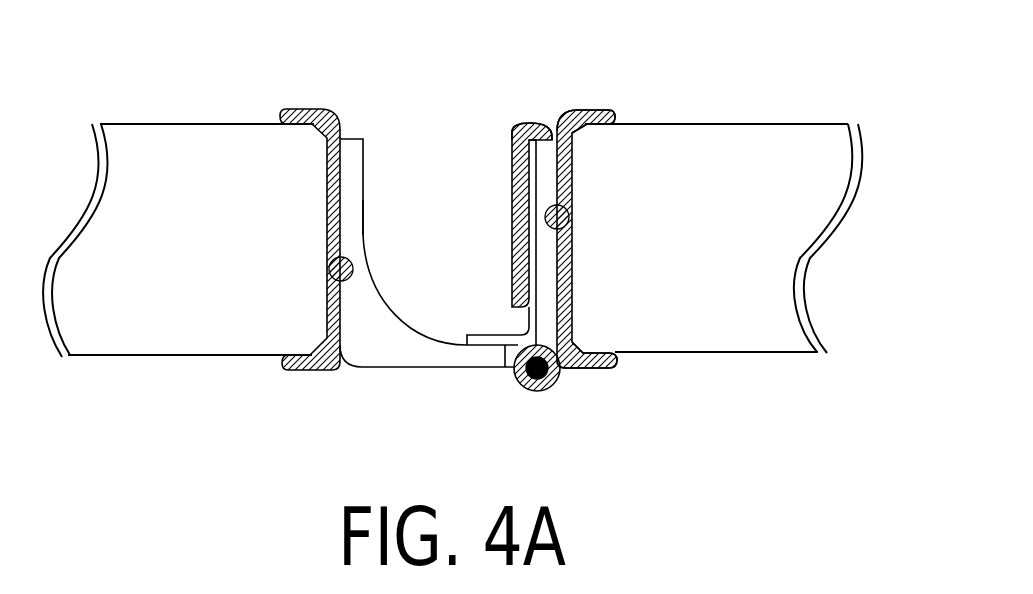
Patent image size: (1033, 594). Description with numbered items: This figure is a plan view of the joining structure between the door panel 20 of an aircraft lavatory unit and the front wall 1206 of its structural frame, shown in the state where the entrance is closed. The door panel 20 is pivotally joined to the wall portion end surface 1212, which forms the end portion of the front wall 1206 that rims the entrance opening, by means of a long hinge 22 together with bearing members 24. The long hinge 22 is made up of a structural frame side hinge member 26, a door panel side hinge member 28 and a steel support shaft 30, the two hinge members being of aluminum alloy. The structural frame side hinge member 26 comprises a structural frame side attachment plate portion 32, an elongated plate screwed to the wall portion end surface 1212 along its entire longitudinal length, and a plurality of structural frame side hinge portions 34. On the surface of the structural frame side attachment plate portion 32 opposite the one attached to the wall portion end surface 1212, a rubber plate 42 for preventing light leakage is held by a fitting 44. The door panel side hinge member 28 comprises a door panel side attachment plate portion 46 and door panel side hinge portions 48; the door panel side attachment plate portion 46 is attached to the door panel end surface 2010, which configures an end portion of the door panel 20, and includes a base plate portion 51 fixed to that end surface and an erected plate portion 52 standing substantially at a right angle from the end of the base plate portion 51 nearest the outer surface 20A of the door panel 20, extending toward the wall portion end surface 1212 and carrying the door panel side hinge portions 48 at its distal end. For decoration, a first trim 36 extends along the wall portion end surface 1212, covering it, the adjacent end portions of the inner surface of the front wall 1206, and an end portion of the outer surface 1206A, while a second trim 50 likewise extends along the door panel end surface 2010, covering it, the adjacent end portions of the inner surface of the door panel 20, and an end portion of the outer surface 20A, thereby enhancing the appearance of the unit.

The door panel 20 is at (178, 278).
The outer surface of the door panel 20A is at (97, 357).
The door panel end surface 2010 is at (330, 265).
The door panel side hinge member 28 is at (270, 217).
The second trim 50 is at (411, 238).
The base plate portion 51 is at (362, 176).
The erected plate portion 52 is at (385, 370).
The door panel side attachment plate portion 46 is at (363, 215).
The long hinge 22 is at (507, 407).
The door panel side hinge portions 48 is at (512, 375).
The bearing member 24 is at (558, 384).
The support shaft 30 is at (530, 389).
The structural frame side attachment plate portion 32 is at (497, 182).
The fitting 44 is at (512, 140).
The rubber plate 42 is at (518, 334).
The structural frame side hinge member 26 is at (625, 209).
The first trim 36 is at (594, 109).
The structural frame side hinge portions 34 is at (573, 368).
The wall portion end surface 1212 is at (569, 203).
The front wall 1206 is at (723, 286).
The outer surface of the front wall 1206A is at (793, 353).